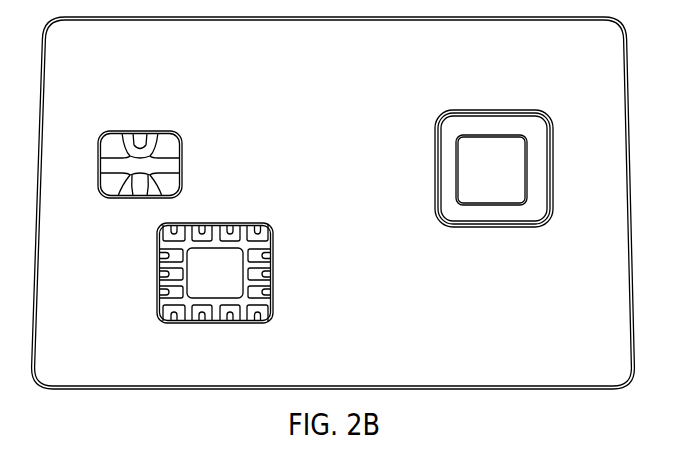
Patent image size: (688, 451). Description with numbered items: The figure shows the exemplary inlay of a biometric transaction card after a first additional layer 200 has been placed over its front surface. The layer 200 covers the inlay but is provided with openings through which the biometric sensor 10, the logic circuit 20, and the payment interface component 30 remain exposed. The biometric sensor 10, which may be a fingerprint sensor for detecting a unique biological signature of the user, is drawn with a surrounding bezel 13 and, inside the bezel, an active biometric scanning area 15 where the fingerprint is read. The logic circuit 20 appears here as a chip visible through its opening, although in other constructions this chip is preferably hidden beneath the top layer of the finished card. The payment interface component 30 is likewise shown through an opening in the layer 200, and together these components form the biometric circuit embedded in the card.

The biometric sensor 10 is at (430, 112).
The layer 200 is at (343, 174).
The payment interface component 30 is at (166, 133).
The logic circuit 20 is at (274, 276).
The bezel 13 is at (490, 126).
The active biometric scanning area 15 is at (528, 168).